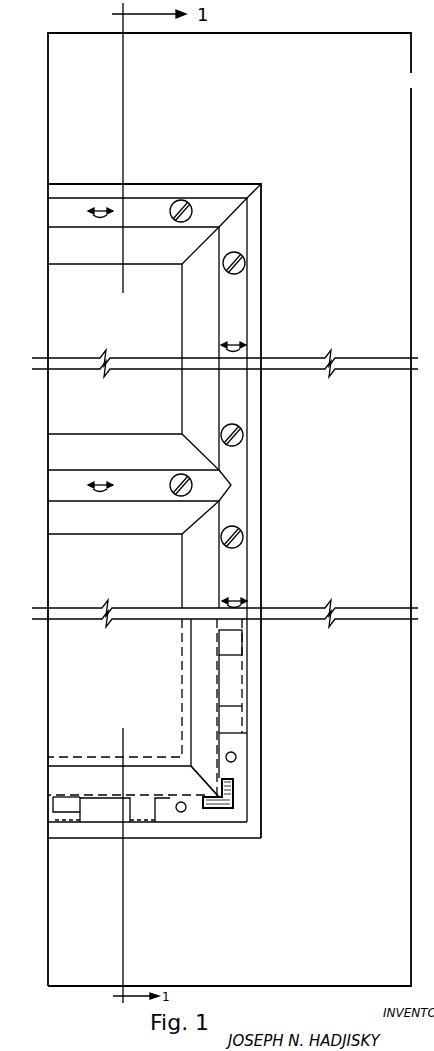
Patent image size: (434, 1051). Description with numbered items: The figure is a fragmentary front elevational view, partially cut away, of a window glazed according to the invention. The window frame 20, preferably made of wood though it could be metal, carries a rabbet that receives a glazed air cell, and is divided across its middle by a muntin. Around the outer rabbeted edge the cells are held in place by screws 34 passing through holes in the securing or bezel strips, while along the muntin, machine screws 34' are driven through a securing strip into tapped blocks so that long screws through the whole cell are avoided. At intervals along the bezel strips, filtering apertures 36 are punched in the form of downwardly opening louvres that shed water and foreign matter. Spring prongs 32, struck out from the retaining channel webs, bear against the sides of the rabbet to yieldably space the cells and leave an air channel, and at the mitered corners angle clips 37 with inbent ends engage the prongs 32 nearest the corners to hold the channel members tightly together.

The window frame 20 is at (48, 58).
The spring prongs 32 is at (70, 797).
The screws 34 is at (273, 256).
The machine screws 34' is at (238, 475).
The filtering apertures 36 is at (84, 213).
The angle clips 37 is at (240, 440).